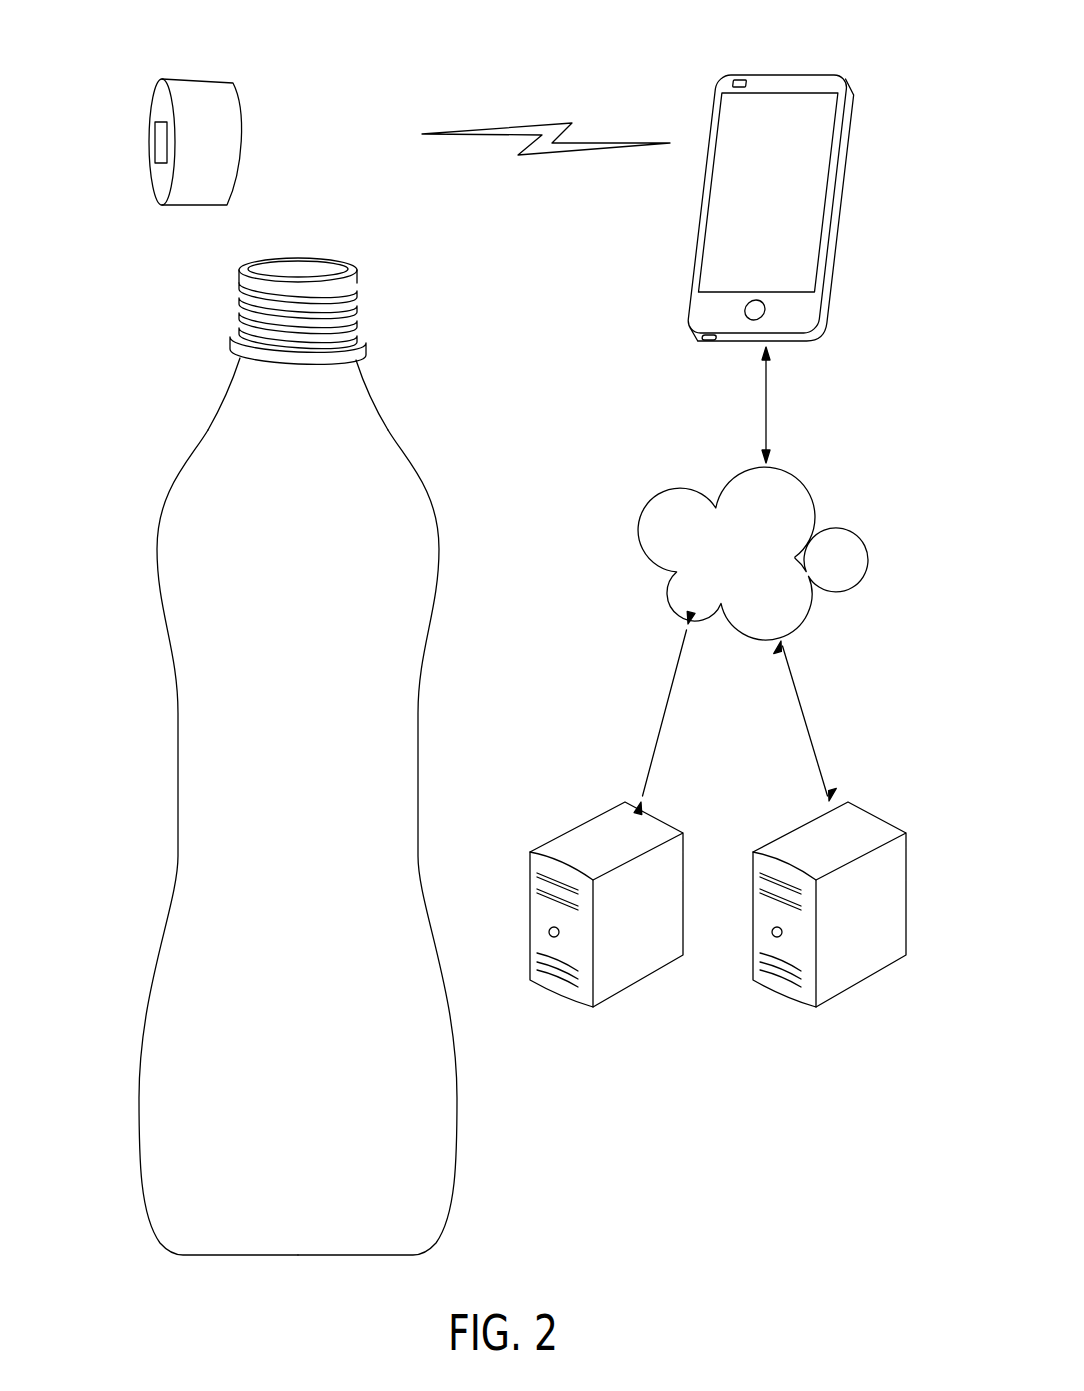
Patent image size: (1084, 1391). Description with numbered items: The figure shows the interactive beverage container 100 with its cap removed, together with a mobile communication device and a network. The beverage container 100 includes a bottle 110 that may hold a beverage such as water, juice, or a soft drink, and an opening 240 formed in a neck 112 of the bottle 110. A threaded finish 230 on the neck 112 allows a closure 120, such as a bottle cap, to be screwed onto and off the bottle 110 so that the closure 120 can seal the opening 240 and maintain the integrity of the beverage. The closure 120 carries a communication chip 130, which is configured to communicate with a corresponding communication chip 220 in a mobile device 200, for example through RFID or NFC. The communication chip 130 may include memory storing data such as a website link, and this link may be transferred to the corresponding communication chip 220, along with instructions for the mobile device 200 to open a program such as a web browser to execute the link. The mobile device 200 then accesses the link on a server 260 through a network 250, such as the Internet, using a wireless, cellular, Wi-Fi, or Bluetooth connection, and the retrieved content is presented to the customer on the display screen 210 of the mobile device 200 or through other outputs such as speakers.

The interactive beverage container 100 is at (170, 369).
The bottle 110 is at (414, 515).
The neck 112 is at (355, 368).
The closure 120 is at (198, 80).
The communication chip 130 is at (162, 147).
The mobile device 200 is at (837, 257).
The display screen 210 is at (715, 267).
The corresponding communication chip 220 is at (738, 78).
The threaded finish 230 is at (356, 299).
The opening 240 is at (290, 268).
The network 250 is at (640, 522).
The server 260 is at (530, 878).